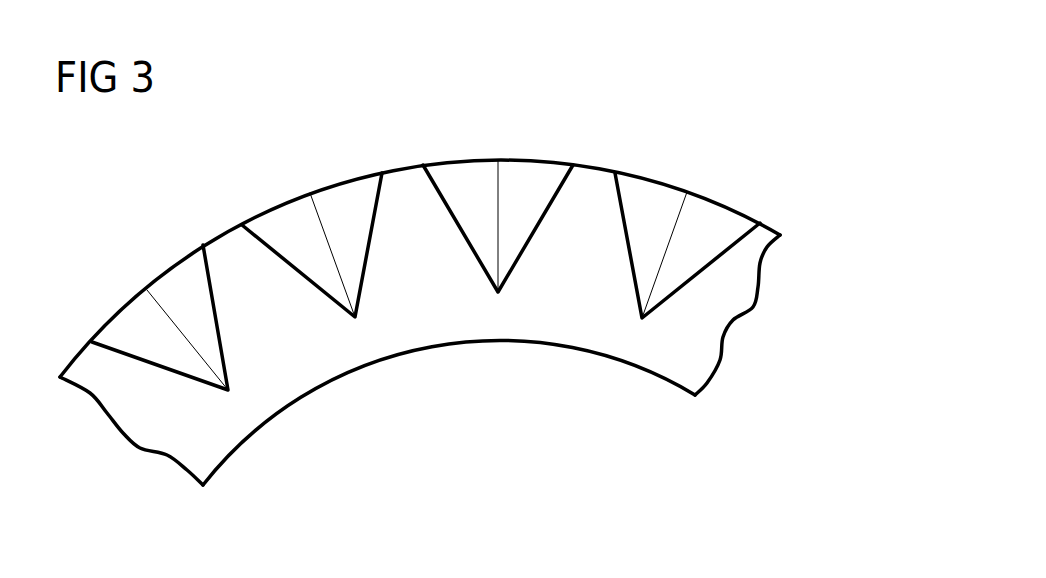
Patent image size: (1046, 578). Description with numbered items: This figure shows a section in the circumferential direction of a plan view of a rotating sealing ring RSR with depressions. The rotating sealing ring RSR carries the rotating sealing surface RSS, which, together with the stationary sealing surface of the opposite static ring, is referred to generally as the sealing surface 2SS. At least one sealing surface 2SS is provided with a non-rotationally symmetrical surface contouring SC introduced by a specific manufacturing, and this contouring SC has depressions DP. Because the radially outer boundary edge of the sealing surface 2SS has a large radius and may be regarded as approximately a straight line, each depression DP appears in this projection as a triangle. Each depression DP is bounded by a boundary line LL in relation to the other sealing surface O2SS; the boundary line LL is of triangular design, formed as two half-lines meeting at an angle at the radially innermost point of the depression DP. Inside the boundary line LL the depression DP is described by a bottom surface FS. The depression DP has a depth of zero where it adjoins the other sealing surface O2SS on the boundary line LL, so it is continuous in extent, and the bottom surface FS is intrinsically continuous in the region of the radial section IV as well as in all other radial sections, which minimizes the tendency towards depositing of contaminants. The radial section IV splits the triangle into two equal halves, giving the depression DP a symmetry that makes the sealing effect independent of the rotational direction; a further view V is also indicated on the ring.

The bottom surface FS is at (151, 292).
The depression DP is at (178, 292).
The other sealing surface O2SS is at (407, 198).
The surface contouring SC is at (487, 195).
The rotating sealing ring RSR is at (432, 325).
The boundary line LL is at (155, 365).
The sealing surface 2SS is at (795, 315).
The rotating sealing surface RSS is at (710, 313).
The view V is at (300, 170).
The radial section IV is at (684, 202).